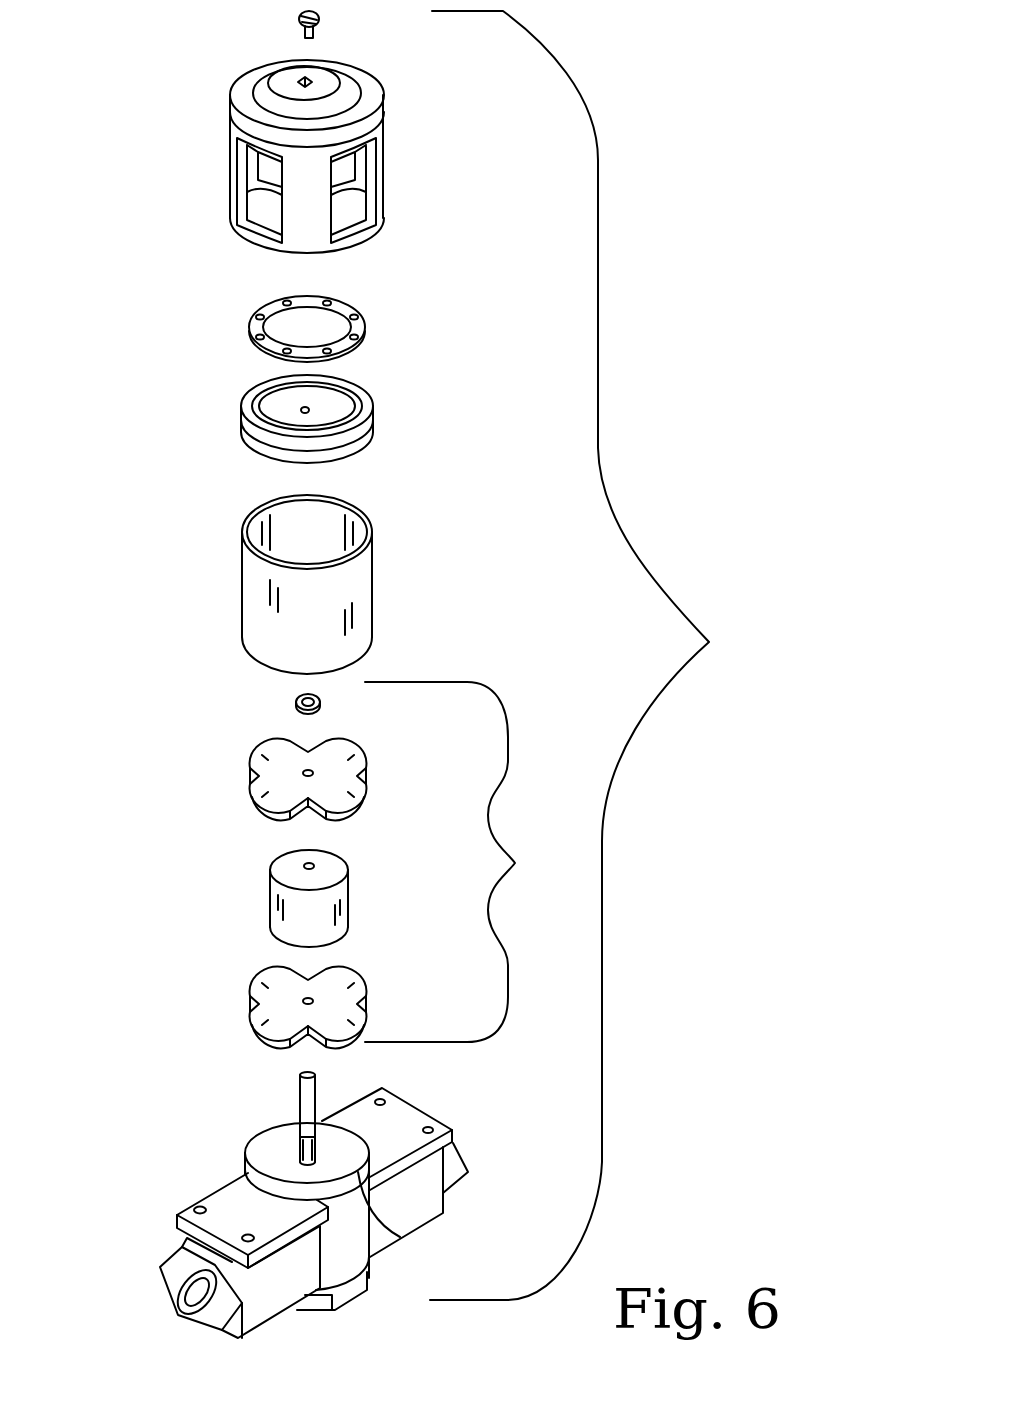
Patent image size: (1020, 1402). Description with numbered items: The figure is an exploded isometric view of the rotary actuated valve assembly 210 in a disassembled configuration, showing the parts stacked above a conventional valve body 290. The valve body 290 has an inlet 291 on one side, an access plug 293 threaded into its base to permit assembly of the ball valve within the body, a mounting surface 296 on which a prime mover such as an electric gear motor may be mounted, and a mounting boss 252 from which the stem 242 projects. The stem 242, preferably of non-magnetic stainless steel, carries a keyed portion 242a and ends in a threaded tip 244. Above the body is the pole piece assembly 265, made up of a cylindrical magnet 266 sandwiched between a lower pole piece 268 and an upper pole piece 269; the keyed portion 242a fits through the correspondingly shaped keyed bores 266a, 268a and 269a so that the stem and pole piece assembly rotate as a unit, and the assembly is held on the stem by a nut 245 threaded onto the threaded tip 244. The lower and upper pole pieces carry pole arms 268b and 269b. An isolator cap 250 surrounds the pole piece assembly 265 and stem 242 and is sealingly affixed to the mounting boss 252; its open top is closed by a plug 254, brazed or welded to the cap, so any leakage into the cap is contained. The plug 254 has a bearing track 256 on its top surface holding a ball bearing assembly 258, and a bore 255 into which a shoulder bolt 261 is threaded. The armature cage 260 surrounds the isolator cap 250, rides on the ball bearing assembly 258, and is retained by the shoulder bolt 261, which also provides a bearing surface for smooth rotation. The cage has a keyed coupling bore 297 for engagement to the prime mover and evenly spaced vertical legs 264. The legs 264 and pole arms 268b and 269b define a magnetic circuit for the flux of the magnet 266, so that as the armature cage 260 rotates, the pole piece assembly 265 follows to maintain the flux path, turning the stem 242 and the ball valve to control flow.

The rotary actuated valve assembly 210 is at (589, 655).
The shoulder bolt 261 is at (320, 18).
The armature cage 260 is at (285, 149).
The keyed coupling bore 297 is at (300, 78).
The legs 264 is at (232, 185).
The ball bearing assembly 258 is at (365, 311).
The plug 254 is at (304, 412).
The bearing track 256 is at (262, 397).
The bore 255 is at (310, 408).
The isolator cap 250 is at (365, 571).
The nut 245 is at (296, 700).
The pole piece assembly 265 is at (458, 862).
The upper pole piece 269 is at (310, 784).
The keyed bore 269a is at (308, 770).
The pole arms 269b is at (250, 754).
The cylindrical magnet 266 is at (270, 898).
The keyed bore 266a is at (308, 867).
The lower pole piece 268 is at (312, 1012).
The keyed bore 268a is at (308, 998).
The pole arms 268b is at (250, 982).
The threaded tip 244 is at (322, 1111).
The keyed portion 242a is at (315, 1097).
The stem 242 is at (300, 1150).
The mounting surface 296 is at (200, 1205).
The mounting boss 252 is at (400, 1237).
The valve body 290 is at (260, 1295).
The inlet 291 is at (190, 1295).
The access plug 293 is at (348, 1296).